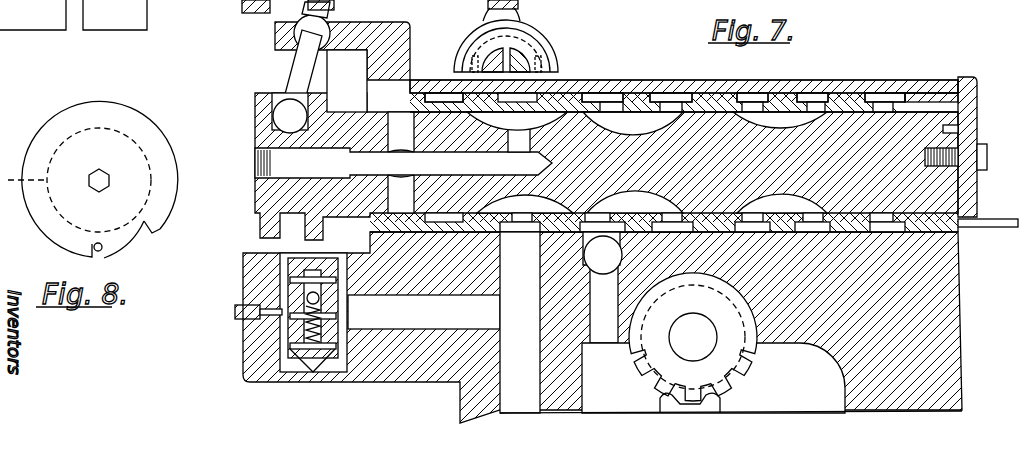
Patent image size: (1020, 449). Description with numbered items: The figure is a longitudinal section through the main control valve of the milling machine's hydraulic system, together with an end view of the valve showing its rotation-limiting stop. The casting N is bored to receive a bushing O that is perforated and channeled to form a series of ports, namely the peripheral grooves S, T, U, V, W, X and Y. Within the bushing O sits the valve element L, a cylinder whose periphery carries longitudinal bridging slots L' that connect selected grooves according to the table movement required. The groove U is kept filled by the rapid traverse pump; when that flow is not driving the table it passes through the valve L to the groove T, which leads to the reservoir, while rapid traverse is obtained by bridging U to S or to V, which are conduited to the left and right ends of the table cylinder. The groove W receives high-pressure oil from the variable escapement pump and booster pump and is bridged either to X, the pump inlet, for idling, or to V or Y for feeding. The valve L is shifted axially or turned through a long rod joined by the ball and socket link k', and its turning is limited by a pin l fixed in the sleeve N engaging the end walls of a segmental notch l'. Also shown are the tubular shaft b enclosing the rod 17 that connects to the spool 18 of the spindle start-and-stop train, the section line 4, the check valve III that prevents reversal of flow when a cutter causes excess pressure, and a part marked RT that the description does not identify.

In FIG. 7, the ball and socket link k' is at (510, 224).
In FIG. 7, the peripheral groove S is at (437, 92).
In FIG. 7, the peripheral groove T is at (528, 100).
In FIG. 7, the peripheral groove U is at (606, 95).
In FIG. 7, the peripheral groove V is at (680, 92).
In FIG. 7, the peripheral groove W is at (745, 95).
In FIG. 7, the peripheral groove X is at (808, 95).
In FIG. 7, the peripheral groove Y is at (878, 95).
In FIG. 7, the casting N is at (938, 90).
In FIG. 7, the bushing O is at (935, 95).
In FIG. 7, the main control valve L is at (963, 131).
In FIG. 7, the bridging slots L' is at (647, 127).
In FIG. 7, the pin l is at (988, 239).
In FIG. 8, the pin l is at (106, 253).
In FIG. 7, the segmental notch l' is at (967, 243).
In FIG. 8, the segmental notch l' is at (159, 237).
In FIG. 7, the spool 18 is at (487, 42).
In FIG. 7, the rod 17 is at (488, 58).
In FIG. 7, the tubular shaft b is at (522, 56).
In FIG. 7, the section line 4 is at (548, 20).
In FIG. 7, the check valve III is at (603, 255).
In FIG. 7, the rack RT is at (740, 392).